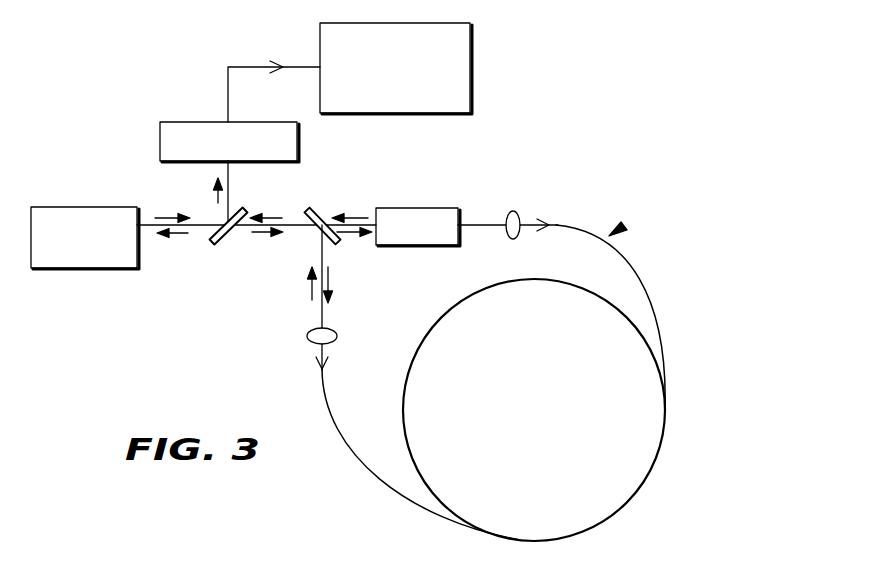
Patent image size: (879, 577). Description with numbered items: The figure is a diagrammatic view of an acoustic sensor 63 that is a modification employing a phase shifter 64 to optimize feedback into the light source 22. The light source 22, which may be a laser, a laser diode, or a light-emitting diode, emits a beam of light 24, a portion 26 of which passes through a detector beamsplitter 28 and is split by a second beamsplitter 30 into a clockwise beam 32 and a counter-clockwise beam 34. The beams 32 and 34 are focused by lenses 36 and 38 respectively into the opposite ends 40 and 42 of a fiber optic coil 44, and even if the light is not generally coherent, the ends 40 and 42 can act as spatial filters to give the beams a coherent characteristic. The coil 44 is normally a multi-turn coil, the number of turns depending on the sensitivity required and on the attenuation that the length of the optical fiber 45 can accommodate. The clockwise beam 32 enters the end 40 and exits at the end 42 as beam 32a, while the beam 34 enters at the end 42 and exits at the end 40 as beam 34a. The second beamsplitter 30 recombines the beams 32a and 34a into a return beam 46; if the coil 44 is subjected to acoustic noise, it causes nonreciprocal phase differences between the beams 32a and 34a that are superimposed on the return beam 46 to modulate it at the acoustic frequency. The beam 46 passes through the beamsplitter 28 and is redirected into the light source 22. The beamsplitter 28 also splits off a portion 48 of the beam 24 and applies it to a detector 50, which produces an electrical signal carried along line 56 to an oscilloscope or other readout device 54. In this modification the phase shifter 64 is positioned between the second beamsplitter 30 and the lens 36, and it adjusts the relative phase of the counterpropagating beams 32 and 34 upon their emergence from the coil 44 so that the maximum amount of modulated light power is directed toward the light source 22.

The light source 22 is at (85, 269).
The beam of light 24 is at (166, 194).
The portion of the beam 26 is at (256, 235).
The detector beamsplitter 28 is at (214, 243).
The second beamsplitter 30 is at (310, 210).
The clockwise beam 32 is at (344, 236).
The exiting clockwise beam 32a is at (312, 298).
The counter-clockwise beam 34 is at (331, 268).
The exiting counter-clockwise beam 34a is at (355, 216).
The lens 36 is at (520, 216).
The lens 38 is at (307, 336).
The end of fiber optic coil 40 is at (556, 226).
The end of fiber optic coil 42 is at (326, 370).
The fiber optic coil 44 is at (606, 518).
The optical fiber 45 is at (648, 290).
The return beam 46 is at (166, 236).
The portion of the beam 48 is at (216, 198).
The detector 50 is at (185, 122).
The readout device 54 is at (472, 62).
The detector output line 56 is at (258, 67).
The sensor 63 is at (624, 226).
The phase shifter 64 is at (430, 247).